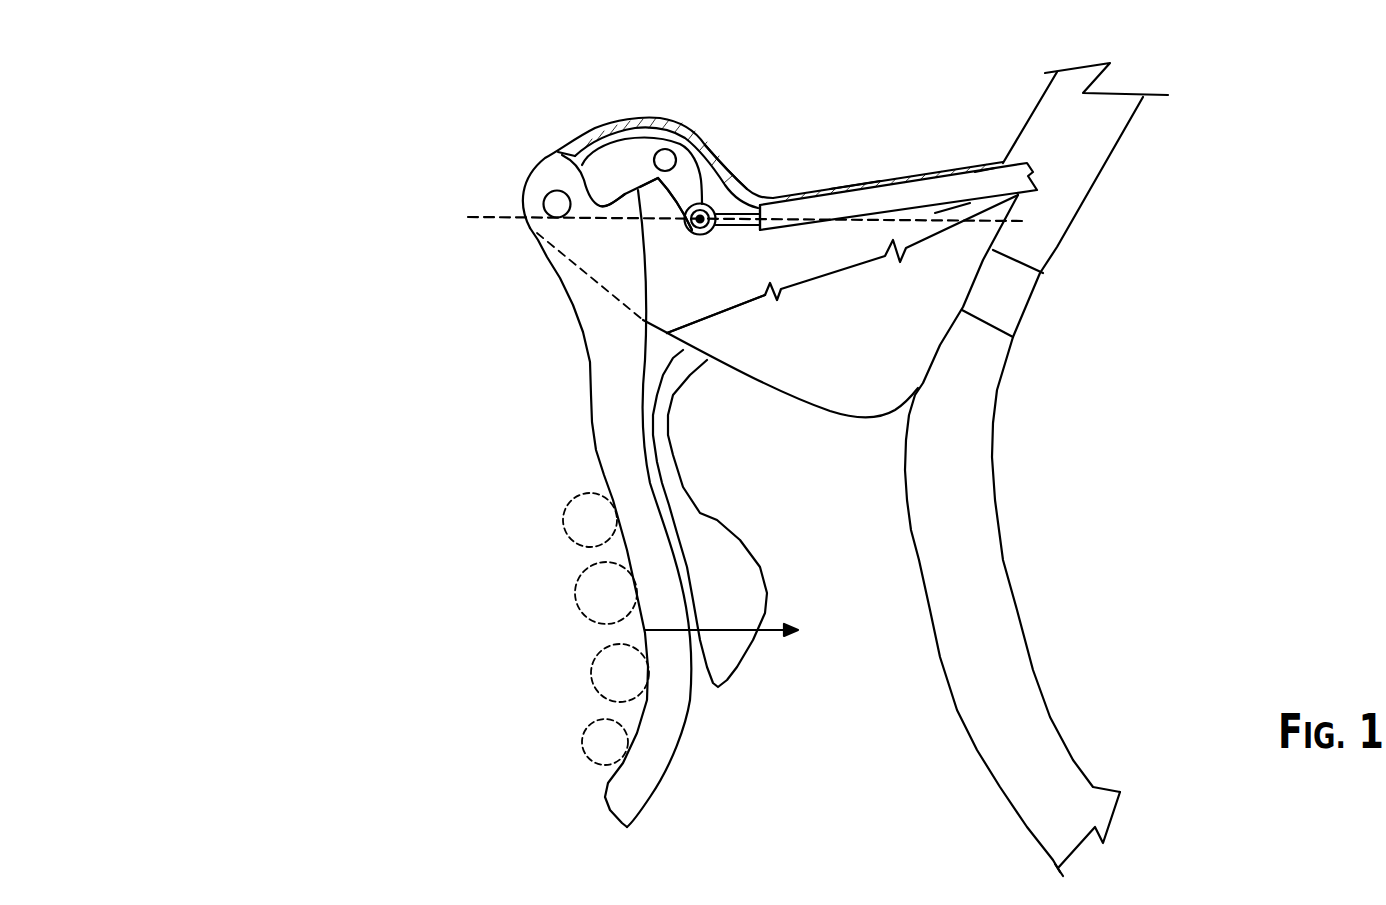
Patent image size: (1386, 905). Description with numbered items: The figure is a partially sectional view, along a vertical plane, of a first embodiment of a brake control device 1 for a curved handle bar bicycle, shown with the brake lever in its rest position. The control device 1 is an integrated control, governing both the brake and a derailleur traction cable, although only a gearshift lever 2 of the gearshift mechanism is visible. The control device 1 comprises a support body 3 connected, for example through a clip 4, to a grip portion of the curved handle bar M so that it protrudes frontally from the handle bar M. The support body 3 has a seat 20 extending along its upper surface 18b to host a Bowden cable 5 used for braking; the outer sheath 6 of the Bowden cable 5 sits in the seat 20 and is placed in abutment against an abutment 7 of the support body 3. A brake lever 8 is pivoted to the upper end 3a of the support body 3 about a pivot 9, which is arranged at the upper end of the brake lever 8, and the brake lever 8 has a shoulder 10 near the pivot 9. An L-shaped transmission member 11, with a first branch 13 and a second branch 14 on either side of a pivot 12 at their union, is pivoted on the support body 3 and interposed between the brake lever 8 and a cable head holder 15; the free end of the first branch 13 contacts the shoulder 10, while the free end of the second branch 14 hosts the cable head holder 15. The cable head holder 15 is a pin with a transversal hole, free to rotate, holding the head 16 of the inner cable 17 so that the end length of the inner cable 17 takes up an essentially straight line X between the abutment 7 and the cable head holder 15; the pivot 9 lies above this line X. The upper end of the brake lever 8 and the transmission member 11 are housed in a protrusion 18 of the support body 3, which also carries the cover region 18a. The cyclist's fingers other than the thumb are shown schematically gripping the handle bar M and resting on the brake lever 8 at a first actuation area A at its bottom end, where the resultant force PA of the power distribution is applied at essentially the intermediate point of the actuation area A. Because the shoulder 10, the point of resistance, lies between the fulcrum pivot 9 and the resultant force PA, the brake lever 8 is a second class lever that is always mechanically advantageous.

The control device 1 is at (330, 142).
The gearshift lever 2 is at (730, 545).
The support body 3 is at (850, 398).
The upper end of the support body 3a is at (526, 158).
The clip 4 is at (1010, 317).
The Bowden cable 5 is at (969, 204).
The outer sheath 6 is at (983, 175).
The abutment 7 is at (765, 212).
The brake lever 8 is at (668, 750).
The pivot 9 is at (552, 207).
The shoulder 10 is at (617, 208).
The transmission member 11 is at (657, 196).
The pivot 12 is at (666, 148).
The first branch 13 is at (620, 168).
The second branch 14 is at (703, 188).
The cable head holder 15 is at (689, 238).
The head of the inner cable 16 is at (703, 240).
The inner cable 17 is at (743, 227).
The protrusion 18 is at (638, 108).
The cover strip head portion 18a is at (700, 132).
The upper surface 18b is at (853, 185).
The seat 20 is at (937, 188).
The line X is at (482, 217).
The first actuation area A is at (512, 490).
The handle bar M is at (1022, 710).
The resultant force PA is at (739, 649).